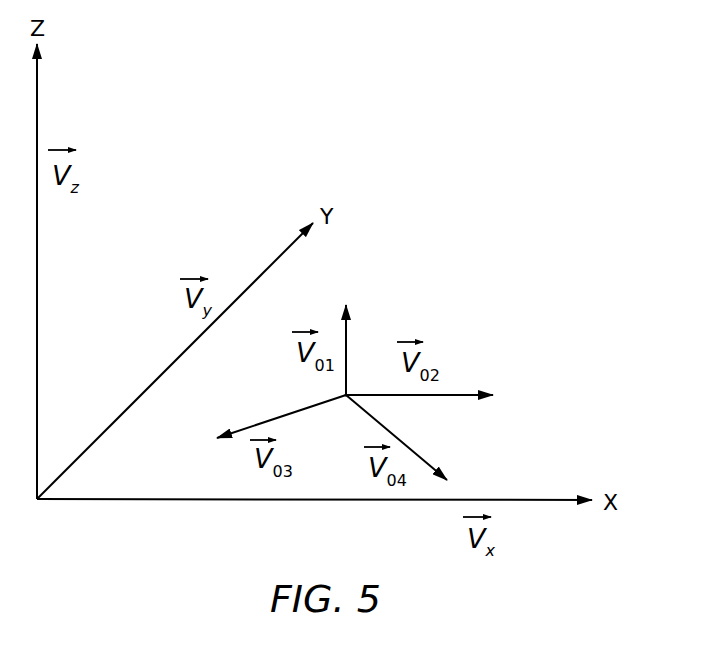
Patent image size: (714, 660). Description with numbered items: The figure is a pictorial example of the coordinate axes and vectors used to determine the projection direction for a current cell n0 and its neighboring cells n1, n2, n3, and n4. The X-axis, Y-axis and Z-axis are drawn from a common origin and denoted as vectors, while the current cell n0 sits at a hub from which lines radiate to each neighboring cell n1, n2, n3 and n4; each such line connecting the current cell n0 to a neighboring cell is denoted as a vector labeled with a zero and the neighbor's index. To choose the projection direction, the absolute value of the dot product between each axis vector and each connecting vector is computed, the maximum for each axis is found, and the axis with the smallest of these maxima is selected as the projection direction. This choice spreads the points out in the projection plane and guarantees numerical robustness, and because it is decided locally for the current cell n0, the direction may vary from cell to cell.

The current cell n0 is at (338, 413).
The neighboring cell n1 is at (350, 337).
The neighboring cell n2 is at (437, 398).
The neighboring cell n3 is at (263, 426).
The neighboring cell n4 is at (412, 444).